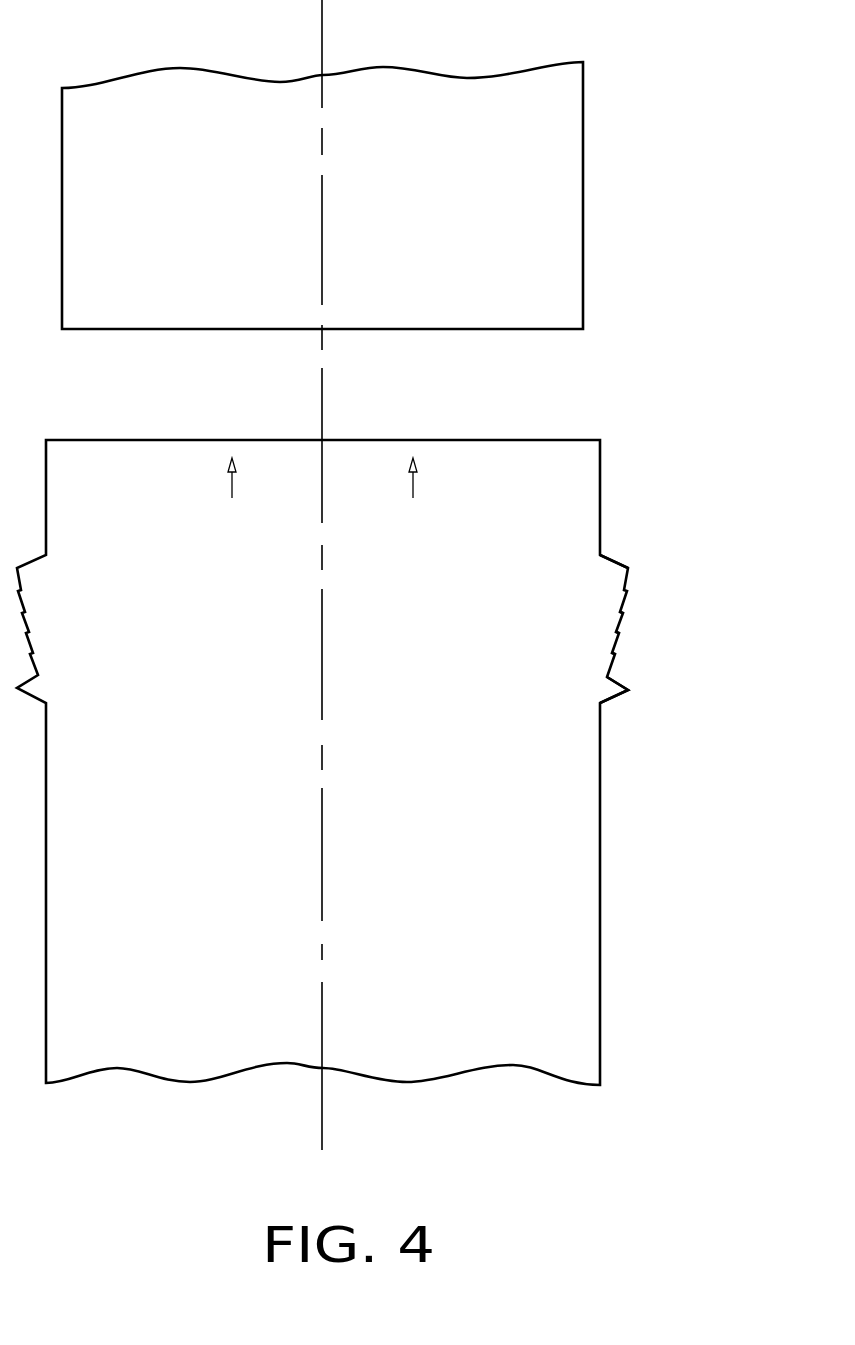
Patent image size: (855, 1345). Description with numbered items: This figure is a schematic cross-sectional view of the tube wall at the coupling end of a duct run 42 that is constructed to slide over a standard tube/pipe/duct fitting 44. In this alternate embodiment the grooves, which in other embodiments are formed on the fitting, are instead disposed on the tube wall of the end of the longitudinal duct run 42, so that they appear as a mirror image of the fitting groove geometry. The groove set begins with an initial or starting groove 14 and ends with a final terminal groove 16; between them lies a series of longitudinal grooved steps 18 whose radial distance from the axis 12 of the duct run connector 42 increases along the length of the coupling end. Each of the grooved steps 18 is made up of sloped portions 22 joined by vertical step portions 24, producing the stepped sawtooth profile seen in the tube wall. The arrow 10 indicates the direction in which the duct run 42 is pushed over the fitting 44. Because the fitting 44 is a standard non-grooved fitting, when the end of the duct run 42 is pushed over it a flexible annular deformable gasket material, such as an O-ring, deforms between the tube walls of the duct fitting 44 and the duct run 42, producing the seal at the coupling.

The direction of movement arrow 10 is at (625, 1019).
The axis 12 is at (323, 512).
The initial or starting groove 14 is at (618, 567).
The final terminal groove 16 is at (643, 780).
The longitudinal grooved steps 18 is at (643, 573).
The sloped portions 22 is at (616, 647).
The vertical step portions 24 is at (614, 650).
The duct run 42 is at (601, 480).
The tube/pipe/duct fitting 44 is at (584, 224).